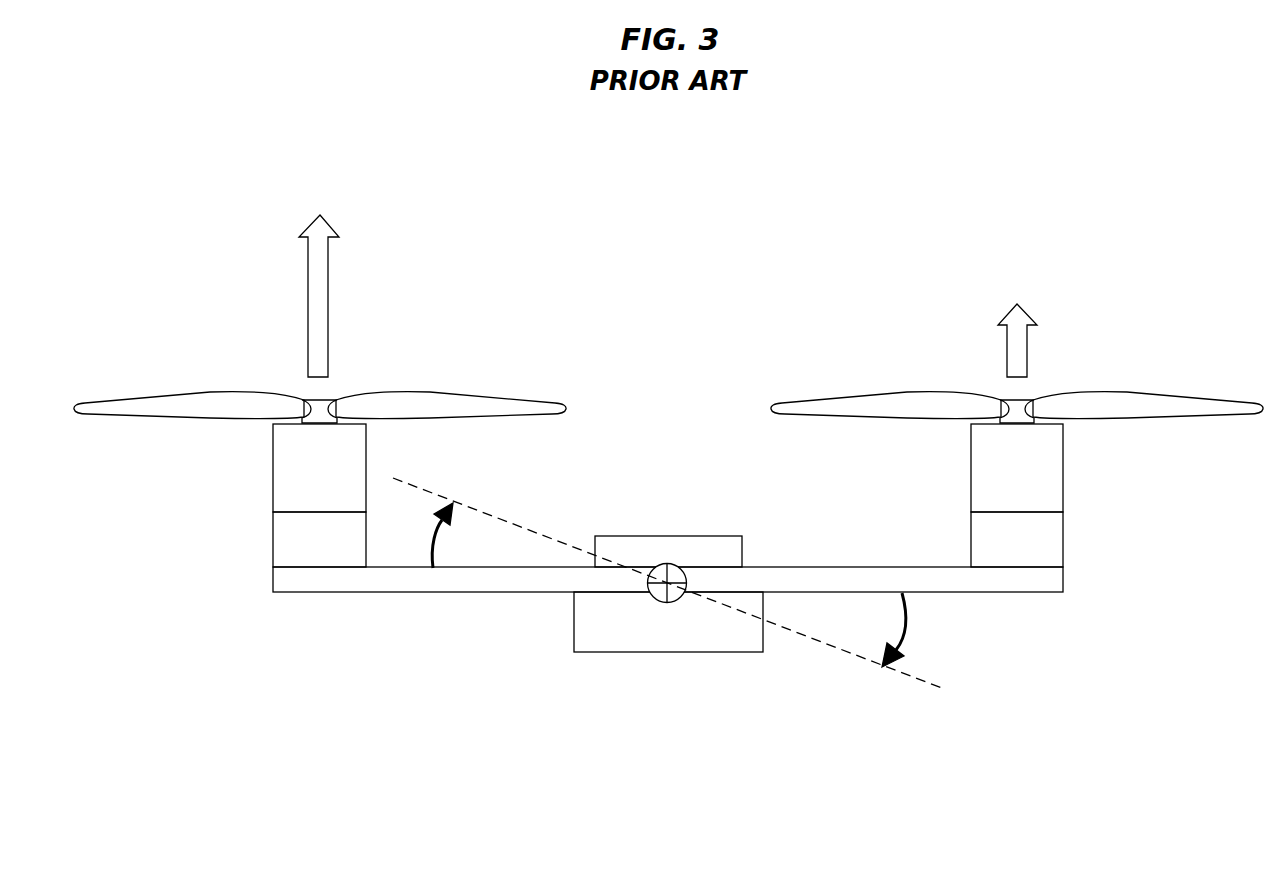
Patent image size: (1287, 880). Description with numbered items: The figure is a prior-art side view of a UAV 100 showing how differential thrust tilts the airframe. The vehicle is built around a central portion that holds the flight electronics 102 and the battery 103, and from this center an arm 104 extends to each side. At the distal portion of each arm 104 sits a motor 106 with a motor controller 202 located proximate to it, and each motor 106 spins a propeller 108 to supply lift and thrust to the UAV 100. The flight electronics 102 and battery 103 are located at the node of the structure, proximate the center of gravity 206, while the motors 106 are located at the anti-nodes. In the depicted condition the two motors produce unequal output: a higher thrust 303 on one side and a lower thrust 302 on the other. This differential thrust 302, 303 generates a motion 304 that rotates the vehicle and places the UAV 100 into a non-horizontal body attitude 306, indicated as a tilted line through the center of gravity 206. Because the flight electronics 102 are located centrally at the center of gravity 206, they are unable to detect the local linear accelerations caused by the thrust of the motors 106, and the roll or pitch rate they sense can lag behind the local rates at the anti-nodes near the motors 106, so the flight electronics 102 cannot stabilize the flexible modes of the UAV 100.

The UAV 100 is at (840, 195).
The flight electronics 102 is at (706, 535).
The battery 103 is at (693, 640).
The arm 104 is at (423, 592).
The motor 106 is at (1063, 458).
The propeller 108 is at (1142, 390).
The motor controller 202 is at (1063, 538).
The center of gravity 206 is at (652, 600).
The differential thrust 302 is at (1027, 339).
The differential thrust 303 is at (328, 270).
The motion 304 is at (902, 652).
The body attitude 306 is at (843, 652).